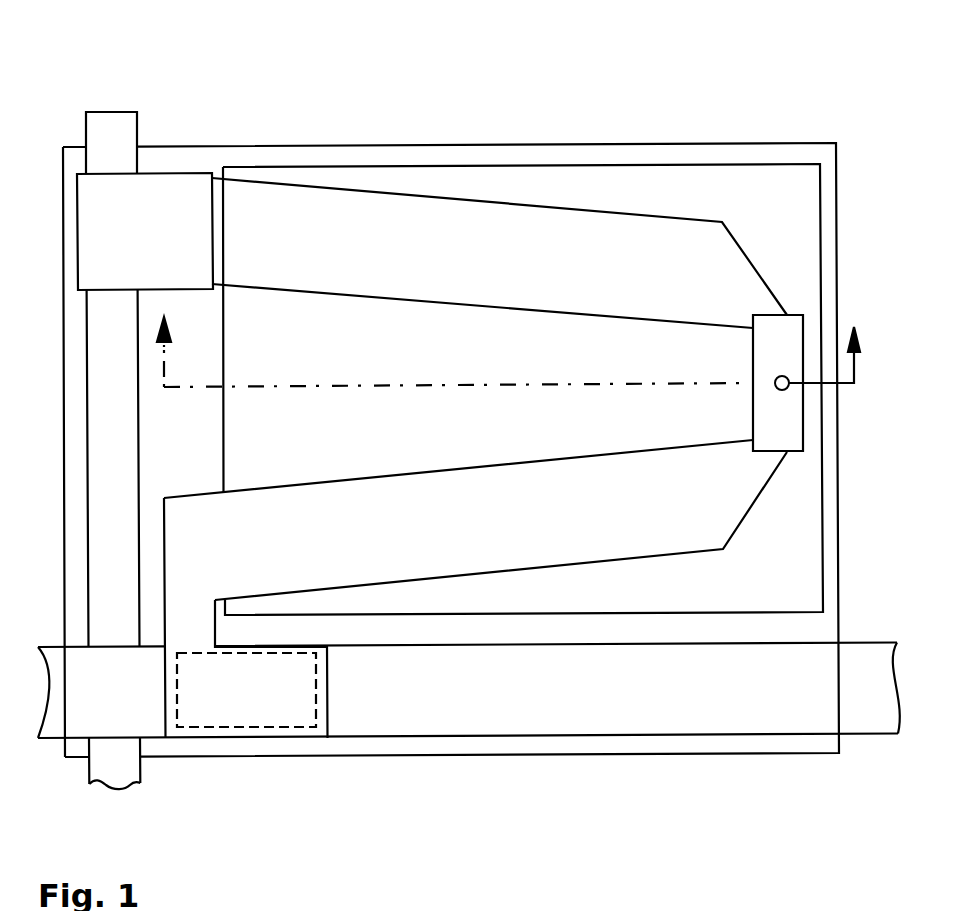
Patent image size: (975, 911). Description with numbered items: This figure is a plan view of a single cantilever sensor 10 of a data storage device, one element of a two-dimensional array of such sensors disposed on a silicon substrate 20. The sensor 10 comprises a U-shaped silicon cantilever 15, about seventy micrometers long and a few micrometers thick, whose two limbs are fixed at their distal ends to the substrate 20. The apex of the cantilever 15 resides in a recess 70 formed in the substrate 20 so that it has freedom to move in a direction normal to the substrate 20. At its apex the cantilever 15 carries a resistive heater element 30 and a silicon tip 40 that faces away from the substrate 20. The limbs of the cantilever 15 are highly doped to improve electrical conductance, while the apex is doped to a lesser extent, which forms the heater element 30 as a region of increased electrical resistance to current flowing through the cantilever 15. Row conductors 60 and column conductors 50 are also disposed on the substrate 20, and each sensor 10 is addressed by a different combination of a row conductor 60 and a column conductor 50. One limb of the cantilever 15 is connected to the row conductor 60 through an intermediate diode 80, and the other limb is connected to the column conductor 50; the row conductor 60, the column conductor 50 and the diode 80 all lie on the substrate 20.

The cantilever sensor 10 is at (436, 127).
The U-shaped silicon cantilever 15 is at (577, 210).
The silicon substrate 20 is at (838, 179).
The resistive heater element 30 is at (803, 332).
The silicon tip 40 is at (789, 388).
The column conductor 50 is at (122, 137).
The row conductor 60 is at (765, 702).
The recess 70 is at (795, 565).
The intermediate diode 80 is at (251, 705).